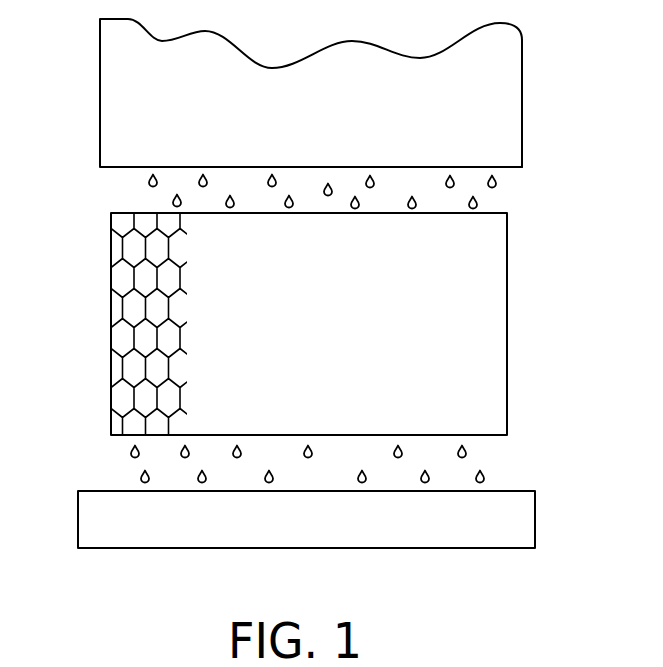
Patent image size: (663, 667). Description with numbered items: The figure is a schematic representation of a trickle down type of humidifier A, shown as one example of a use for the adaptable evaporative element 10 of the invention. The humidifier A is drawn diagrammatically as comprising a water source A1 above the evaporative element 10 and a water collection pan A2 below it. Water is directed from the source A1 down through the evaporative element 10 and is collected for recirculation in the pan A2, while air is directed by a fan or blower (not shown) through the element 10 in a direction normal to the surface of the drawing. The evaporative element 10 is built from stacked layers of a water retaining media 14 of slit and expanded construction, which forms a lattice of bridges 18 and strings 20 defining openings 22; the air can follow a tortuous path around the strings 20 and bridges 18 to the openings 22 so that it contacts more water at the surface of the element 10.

The humidifier A is at (549, 106).
The water source A1 is at (120, 101).
The water collection pan A2 is at (99, 525).
The evaporative element 10 is at (541, 278).
The water retaining media 14 is at (124, 229).
The bridges 18 is at (126, 325).
The strings 20 is at (122, 340).
The openings 22 is at (131, 373).